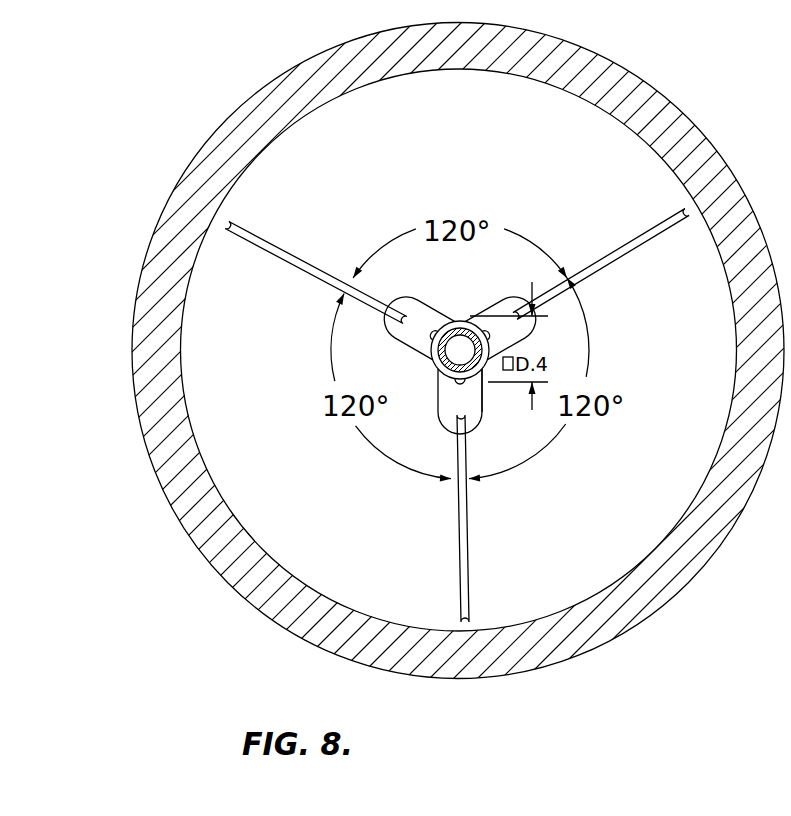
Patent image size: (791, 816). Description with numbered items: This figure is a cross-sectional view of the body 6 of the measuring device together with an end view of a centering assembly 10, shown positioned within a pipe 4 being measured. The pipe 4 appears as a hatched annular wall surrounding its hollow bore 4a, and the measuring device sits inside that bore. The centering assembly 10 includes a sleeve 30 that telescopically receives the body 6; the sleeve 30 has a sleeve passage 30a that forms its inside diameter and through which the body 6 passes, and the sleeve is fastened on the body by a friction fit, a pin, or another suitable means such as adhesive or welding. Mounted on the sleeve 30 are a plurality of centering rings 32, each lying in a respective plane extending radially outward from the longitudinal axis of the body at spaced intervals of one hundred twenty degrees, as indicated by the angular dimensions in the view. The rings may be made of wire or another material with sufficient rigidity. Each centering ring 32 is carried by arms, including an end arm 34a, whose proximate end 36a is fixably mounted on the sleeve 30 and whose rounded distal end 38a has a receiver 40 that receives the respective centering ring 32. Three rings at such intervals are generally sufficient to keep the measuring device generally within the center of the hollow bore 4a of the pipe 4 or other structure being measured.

The pipe 4 is at (670, 100).
The hollow bore 4a is at (651, 147).
The body 6 is at (446, 323).
The centering assembly 10 is at (372, 205).
The sleeve 30 is at (489, 373).
The sleeve passage 30a is at (438, 388).
The centering ring 32 is at (650, 238).
The end arm 34a is at (470, 432).
The proximate end 36a is at (413, 348).
The distal end 38a is at (405, 299).
The receiver 40 is at (457, 436).